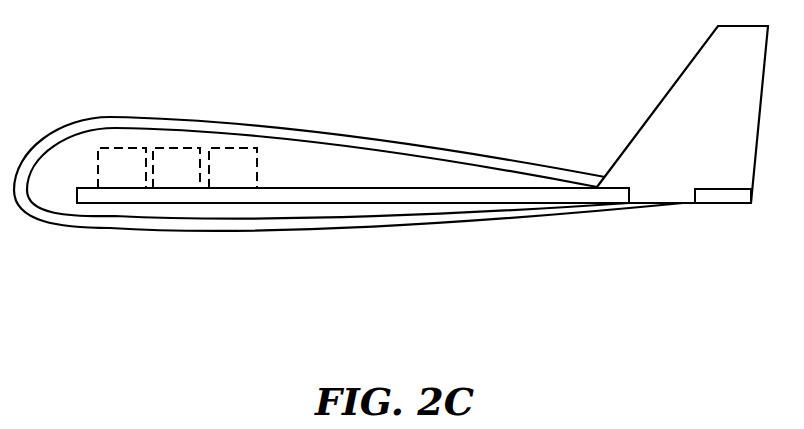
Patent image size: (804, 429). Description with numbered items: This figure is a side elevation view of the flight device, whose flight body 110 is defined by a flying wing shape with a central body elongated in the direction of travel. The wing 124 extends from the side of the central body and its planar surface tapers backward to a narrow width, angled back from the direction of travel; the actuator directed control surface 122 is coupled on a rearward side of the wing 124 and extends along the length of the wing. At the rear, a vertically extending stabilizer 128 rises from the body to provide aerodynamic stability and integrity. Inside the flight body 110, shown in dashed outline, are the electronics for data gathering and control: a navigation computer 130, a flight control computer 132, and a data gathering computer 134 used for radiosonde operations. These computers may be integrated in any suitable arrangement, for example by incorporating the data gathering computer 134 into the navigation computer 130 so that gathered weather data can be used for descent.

The flight body 110 is at (328, 128).
The actuator directed control surfaces 122 is at (628, 193).
The wings 124 is at (305, 193).
The vertically extending stabilizers 128 is at (694, 67).
The navigation computer 130 is at (123, 162).
The flight control computer 132 is at (180, 163).
The data gathering computer 134 is at (238, 165).